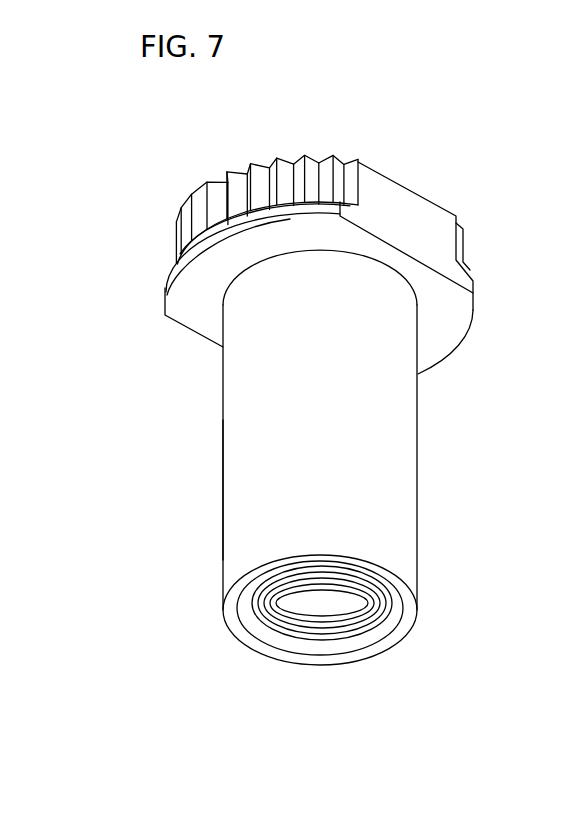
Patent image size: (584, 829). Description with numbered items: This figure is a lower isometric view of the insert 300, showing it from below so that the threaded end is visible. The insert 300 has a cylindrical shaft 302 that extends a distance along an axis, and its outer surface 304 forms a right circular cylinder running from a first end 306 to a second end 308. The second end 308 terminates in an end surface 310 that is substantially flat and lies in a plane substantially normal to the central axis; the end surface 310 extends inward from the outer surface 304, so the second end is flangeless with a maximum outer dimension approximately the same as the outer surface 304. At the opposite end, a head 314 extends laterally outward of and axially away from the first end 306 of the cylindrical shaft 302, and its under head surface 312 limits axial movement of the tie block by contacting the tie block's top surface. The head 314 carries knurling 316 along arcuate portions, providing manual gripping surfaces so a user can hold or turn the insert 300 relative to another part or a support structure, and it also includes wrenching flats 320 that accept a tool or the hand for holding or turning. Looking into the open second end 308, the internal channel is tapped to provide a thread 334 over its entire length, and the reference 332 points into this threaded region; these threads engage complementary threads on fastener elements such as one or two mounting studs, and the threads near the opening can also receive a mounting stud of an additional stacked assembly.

The insert 300 is at (298, 117).
The cylindrical shaft 302 is at (210, 448).
The outer surface 304 is at (246, 492).
The first end 306 is at (442, 322).
The second end 308 is at (212, 632).
The end surface 310 is at (408, 615).
The under head surface 312 is at (207, 315).
The head 314 is at (425, 165).
The knurling 316 is at (180, 177).
The wrenching flats 320 is at (425, 232).
The internal threads 332 is at (265, 648).
The thread 334 is at (337, 632).